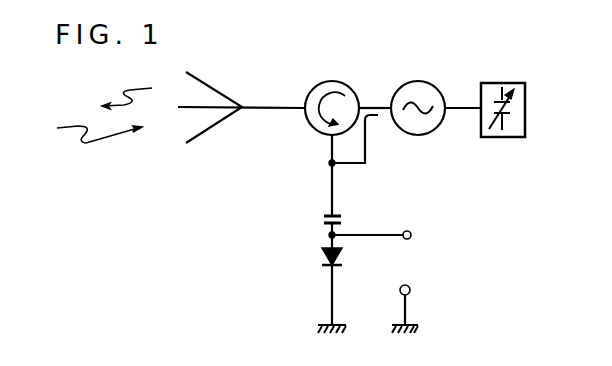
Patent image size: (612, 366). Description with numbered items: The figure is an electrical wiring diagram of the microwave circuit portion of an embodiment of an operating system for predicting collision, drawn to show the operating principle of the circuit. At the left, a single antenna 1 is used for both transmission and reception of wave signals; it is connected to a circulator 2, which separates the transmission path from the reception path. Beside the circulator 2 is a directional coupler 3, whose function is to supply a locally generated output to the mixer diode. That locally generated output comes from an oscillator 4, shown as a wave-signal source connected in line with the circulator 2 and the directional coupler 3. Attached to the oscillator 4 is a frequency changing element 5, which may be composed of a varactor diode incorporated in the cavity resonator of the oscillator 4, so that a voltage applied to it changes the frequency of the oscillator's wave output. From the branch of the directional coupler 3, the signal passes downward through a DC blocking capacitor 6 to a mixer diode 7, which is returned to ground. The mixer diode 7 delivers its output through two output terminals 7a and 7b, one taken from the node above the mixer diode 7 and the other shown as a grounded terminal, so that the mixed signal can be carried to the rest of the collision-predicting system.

The antenna 1 is at (212, 134).
The circulator 2 is at (330, 80).
The directional coupler 3 is at (378, 108).
The oscillator 4 is at (418, 80).
The frequency changing element 5 is at (502, 81).
The DC blocking capacitor 6 is at (346, 214).
The mixer diode 7 is at (320, 257).
The output terminal 7a is at (415, 236).
The output terminal 7b is at (413, 291).